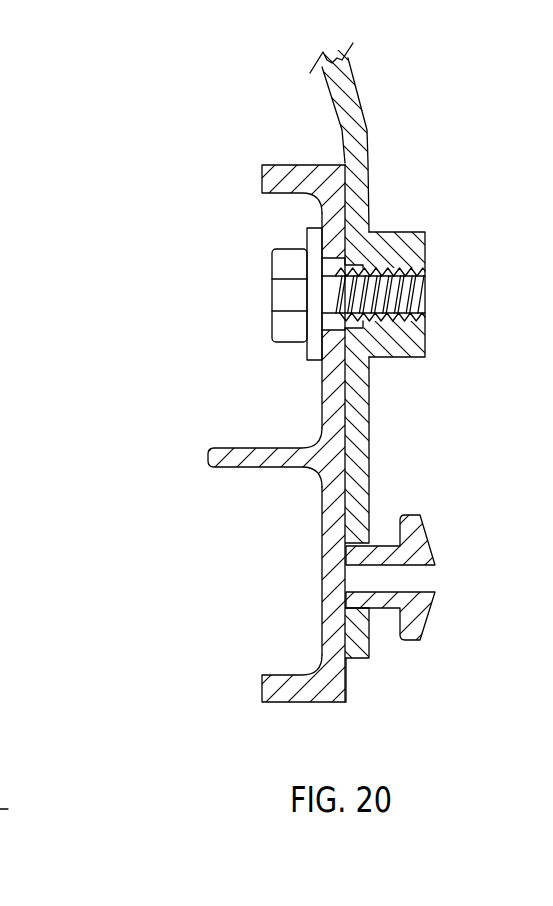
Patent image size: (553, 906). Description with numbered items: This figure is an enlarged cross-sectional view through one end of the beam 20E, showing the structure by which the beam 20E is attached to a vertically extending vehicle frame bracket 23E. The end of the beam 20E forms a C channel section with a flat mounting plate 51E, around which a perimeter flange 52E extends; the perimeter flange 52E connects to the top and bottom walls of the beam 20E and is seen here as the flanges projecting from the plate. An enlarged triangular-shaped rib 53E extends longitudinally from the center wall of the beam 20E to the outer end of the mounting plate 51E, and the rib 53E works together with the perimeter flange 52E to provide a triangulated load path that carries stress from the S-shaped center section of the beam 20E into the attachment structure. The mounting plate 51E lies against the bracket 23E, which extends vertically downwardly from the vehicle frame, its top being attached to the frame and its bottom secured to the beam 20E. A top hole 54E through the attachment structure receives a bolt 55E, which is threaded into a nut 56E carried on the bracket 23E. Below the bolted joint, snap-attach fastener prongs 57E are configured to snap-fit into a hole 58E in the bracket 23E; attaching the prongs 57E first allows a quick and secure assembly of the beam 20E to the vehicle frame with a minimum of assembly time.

The beam 20E is at (268, 95).
The vehicle frame rail / bracket 23E is at (367, 130).
The mounting plate 51E is at (293, 164).
The perimeter flange 52E is at (287, 701).
The triangular-shaped rib 53E is at (230, 447).
The top hole 54E is at (309, 263).
The bolt 55E is at (270, 288).
The nut 56E is at (427, 337).
The snap-attach fastener prongs 57E is at (427, 531).
The hole 58E is at (360, 596).